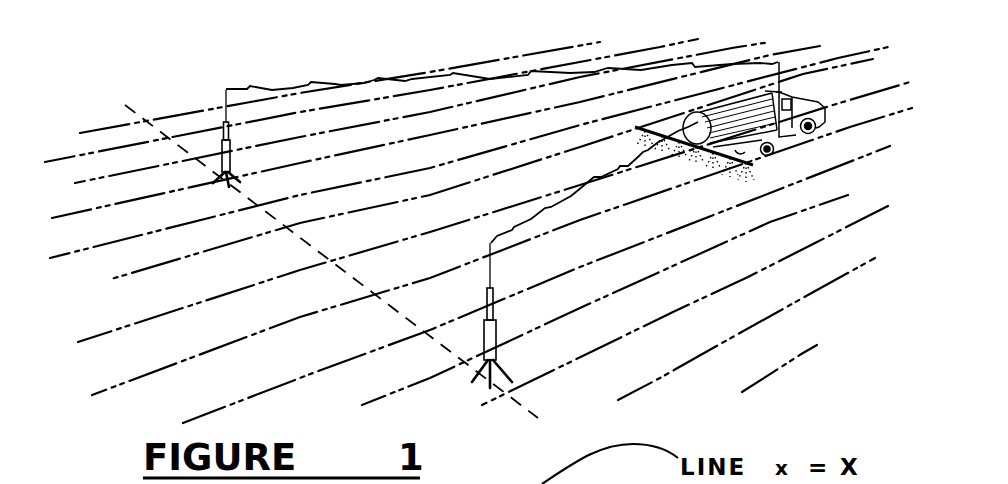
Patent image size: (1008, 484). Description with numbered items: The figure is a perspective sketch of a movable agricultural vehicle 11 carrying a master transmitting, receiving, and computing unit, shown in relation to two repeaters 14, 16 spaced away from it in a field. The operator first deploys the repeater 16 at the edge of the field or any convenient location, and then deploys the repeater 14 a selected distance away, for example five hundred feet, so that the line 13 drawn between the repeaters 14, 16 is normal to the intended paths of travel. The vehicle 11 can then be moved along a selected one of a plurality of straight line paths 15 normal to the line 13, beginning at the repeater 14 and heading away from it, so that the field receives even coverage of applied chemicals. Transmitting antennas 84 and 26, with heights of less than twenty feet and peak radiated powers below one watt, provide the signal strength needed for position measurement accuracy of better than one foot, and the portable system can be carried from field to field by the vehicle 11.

The agricultural vehicle 11 is at (757, 104).
The line formed between the repeaters 13 is at (136, 112).
The repeater 14 is at (221, 153).
The straight line paths 15 is at (143, 319).
The repeater 16 is at (497, 322).
The transmitting antenna 26 is at (778, 62).
The transmitting antenna 84 is at (226, 90).